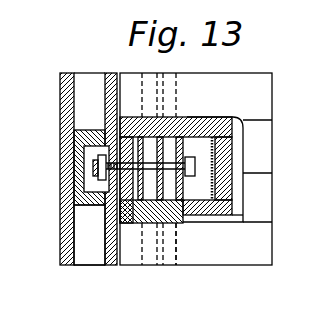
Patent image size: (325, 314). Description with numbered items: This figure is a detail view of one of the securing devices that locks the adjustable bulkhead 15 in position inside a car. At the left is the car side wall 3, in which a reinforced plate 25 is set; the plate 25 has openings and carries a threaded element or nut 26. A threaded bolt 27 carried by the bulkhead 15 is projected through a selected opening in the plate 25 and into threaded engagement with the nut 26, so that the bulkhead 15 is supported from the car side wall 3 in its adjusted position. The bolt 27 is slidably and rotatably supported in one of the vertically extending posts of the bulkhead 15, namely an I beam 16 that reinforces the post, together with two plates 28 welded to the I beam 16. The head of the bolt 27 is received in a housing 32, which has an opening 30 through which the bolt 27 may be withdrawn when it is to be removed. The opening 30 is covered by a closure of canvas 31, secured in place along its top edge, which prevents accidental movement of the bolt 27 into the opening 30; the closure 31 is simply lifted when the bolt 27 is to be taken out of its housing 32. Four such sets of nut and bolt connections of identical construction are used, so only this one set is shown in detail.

The car side wall 3 is at (78, 241).
The adjustable bulkhead 15 is at (257, 236).
The I beam 16 is at (172, 247).
The reinforced plate 25 is at (89, 235).
The nut 26 is at (60, 158).
The threaded bolt 27 is at (182, 173).
The plate 28 is at (150, 195).
The opening 30 is at (243, 180).
The closure of canvas 31 is at (230, 155).
The housing 32 is at (207, 120).